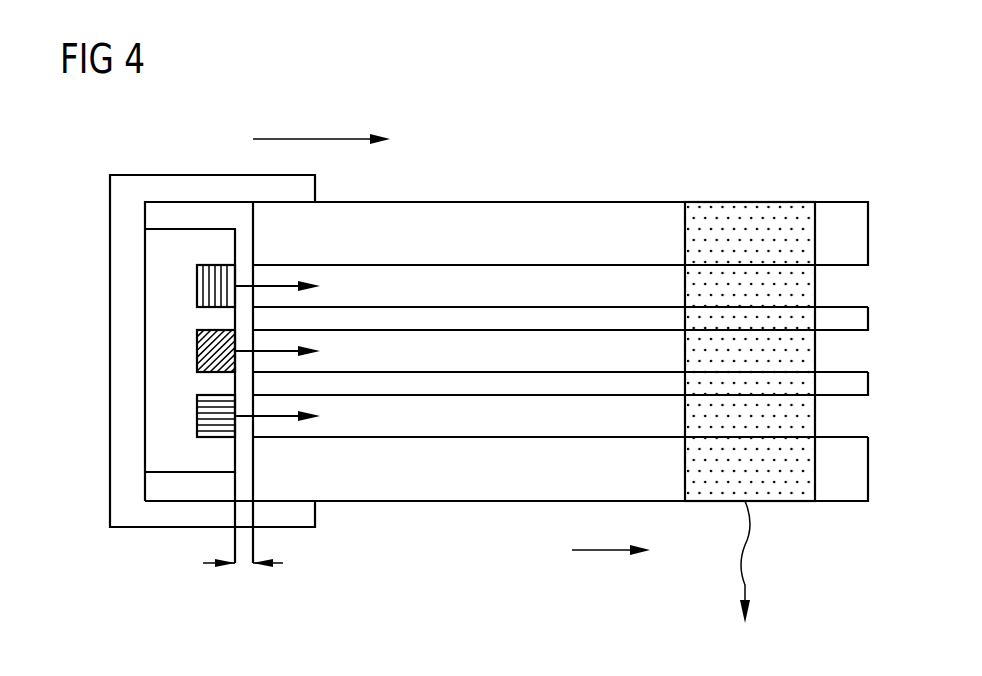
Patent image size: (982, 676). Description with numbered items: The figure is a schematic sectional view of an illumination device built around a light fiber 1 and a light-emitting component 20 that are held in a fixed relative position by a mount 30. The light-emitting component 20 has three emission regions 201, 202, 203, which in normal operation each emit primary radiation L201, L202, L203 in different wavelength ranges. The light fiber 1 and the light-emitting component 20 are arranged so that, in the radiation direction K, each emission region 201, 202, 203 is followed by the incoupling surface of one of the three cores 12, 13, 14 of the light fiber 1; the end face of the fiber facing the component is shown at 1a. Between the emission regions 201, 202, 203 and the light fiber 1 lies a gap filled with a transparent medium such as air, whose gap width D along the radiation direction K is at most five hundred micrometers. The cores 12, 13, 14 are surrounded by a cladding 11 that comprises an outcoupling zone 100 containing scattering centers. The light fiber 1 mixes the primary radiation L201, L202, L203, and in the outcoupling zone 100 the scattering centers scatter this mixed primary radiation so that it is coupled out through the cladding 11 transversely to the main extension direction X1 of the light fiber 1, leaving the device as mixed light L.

The light fiber 1 is at (838, 202).
The coupling-in facet 1a is at (245, 217).
The cladding 11 is at (633, 210).
The core 12 is at (477, 277).
The core 13 is at (477, 357).
The core 14 is at (527, 423).
The outcoupling zone 100 is at (748, 208).
The light-emitting component 20 is at (155, 249).
The emission region 201 is at (197, 286).
The emission region 202 is at (197, 351).
The emission region 203 is at (197, 416).
The mount 30 is at (147, 185).
The gap width D is at (237, 565).
The radiation direction K is at (323, 137).
The main extension direction X1 is at (598, 552).
The mixed light L is at (747, 562).
The primary radiation L201 is at (304, 292).
The primary radiation L202 is at (304, 357).
The primary radiation L203 is at (304, 422).